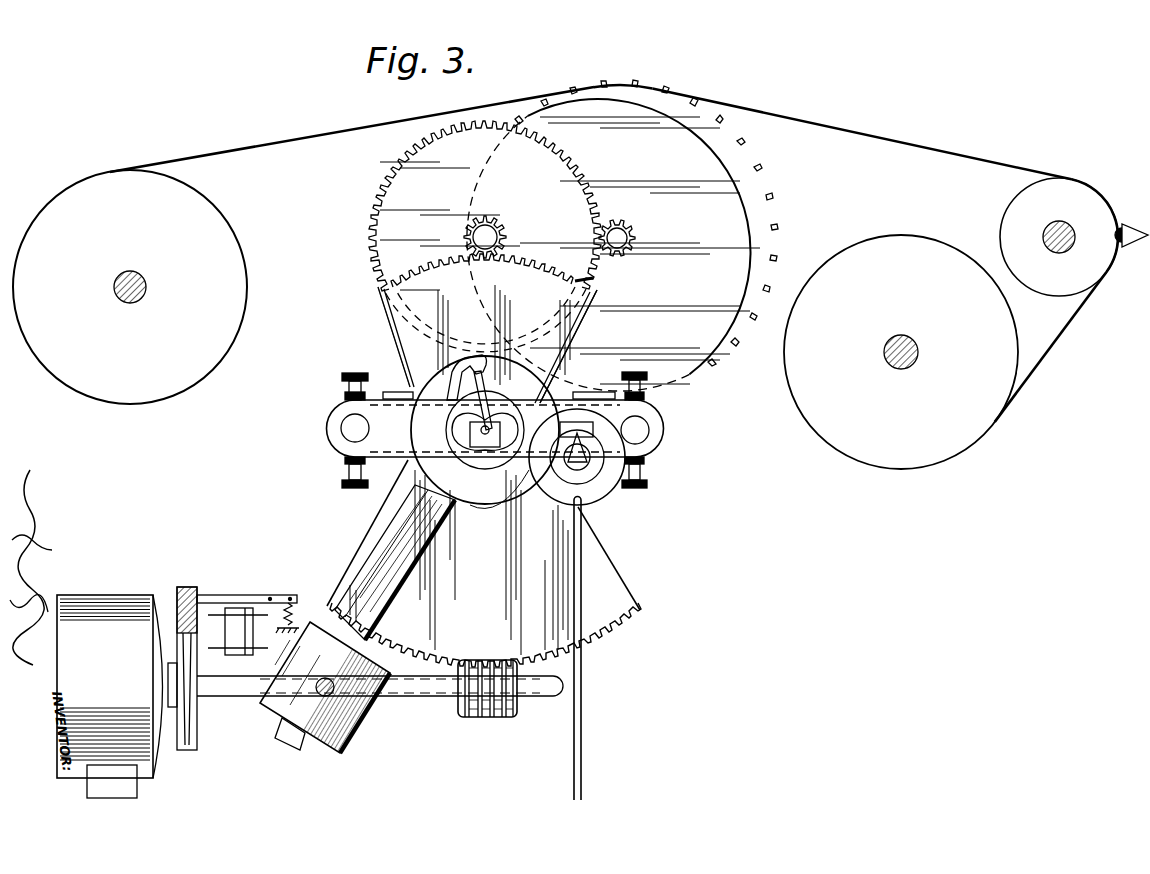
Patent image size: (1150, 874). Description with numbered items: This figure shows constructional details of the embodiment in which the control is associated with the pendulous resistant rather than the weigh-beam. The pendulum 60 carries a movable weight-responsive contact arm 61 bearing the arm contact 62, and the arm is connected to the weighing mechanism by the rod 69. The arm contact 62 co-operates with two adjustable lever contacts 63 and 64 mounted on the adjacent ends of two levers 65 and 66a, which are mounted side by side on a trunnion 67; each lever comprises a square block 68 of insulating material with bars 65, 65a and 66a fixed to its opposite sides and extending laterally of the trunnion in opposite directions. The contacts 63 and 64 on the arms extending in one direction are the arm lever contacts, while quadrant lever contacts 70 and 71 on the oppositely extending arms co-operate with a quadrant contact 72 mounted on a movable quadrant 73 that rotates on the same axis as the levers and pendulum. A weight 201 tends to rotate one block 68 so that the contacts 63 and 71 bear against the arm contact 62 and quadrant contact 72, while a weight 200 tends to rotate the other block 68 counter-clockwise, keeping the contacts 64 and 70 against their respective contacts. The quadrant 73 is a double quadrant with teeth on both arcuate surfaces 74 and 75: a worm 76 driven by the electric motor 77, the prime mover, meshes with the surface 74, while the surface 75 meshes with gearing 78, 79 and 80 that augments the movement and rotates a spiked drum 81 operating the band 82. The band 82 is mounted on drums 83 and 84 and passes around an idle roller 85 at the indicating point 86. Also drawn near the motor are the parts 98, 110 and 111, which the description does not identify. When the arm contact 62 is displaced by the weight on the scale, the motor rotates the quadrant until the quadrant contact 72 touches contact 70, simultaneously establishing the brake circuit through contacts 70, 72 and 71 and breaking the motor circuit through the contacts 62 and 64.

The pendulum 60 is at (405, 594).
The contact arm 61 is at (514, 490).
The arm contact 62 is at (650, 432).
The arm lever contact 63 is at (660, 410).
The arm lever contact 64 is at (648, 470).
The lever 65 is at (566, 386).
The lever bar 65a is at (495, 428).
The lever bar 66a is at (374, 395).
The trunnion 67 is at (486, 462).
The insulating block 68 is at (497, 406).
The rod 69 is at (584, 738).
The quadrant lever contact 70 is at (348, 412).
The quadrant lever contact 71 is at (340, 449).
The quadrant contact 72 is at (340, 430).
The quadrant 73 is at (512, 611).
The arcuate toothed surface 74 is at (622, 618).
The arcuate toothed surface 75 is at (536, 264).
The worm 76 is at (470, 718).
The electric motor 77 is at (115, 600).
The gear 78 is at (492, 224).
The gear 79 is at (594, 279).
The gear 80 is at (637, 232).
The spiked drum 81 is at (757, 216).
The band 82 is at (872, 135).
The drum 83 is at (213, 239).
The drum 84 is at (919, 445).
The idle roller 85 is at (1032, 207).
The indicating point 86 is at (1120, 247).
The solenoid 98 is at (240, 656).
The bracket 110 is at (258, 596).
The pulley 111 is at (200, 742).
The weight 200 is at (452, 372).
The weight 201 is at (593, 393).